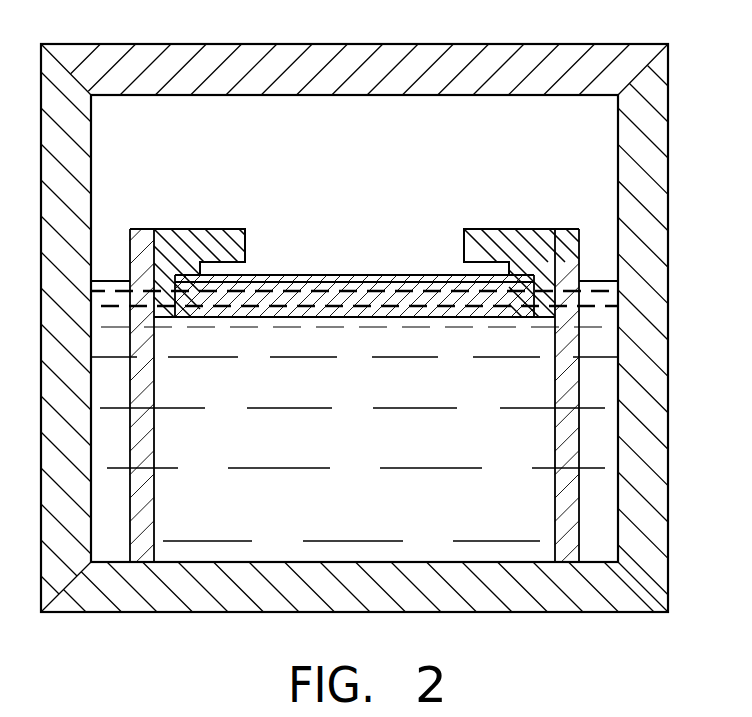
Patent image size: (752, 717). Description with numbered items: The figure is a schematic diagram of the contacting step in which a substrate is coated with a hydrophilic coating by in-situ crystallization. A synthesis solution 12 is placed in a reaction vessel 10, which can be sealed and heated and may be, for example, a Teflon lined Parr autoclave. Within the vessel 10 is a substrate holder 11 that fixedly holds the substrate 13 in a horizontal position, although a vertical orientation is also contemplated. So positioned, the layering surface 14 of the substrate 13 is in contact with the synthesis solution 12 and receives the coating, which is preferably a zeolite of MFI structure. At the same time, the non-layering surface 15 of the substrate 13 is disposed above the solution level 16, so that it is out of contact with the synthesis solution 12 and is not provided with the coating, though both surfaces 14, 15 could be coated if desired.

The reaction vessel 10 is at (433, 44).
The substrate holder 11 is at (180, 228).
The synthesis solution 12 is at (354, 453).
The substrate 13 is at (377, 275).
The layering surface 14 is at (439, 318).
The non-layering surface 15 is at (263, 275).
The solution level 16 is at (107, 281).